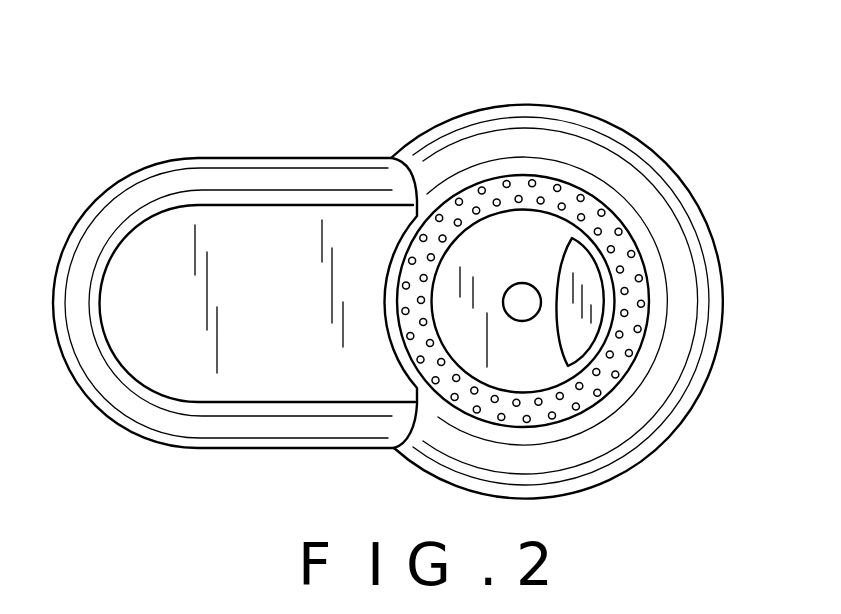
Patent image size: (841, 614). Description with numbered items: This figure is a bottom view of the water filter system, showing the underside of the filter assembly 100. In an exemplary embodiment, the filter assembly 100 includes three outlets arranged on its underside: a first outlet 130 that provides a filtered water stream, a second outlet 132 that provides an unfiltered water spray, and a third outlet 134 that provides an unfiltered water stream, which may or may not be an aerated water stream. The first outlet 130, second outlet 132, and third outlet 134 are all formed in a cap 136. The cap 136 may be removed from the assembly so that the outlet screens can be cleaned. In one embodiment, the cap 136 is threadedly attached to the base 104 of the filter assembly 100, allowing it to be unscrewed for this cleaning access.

The filter assembly 100 is at (442, 72).
The base 104 is at (612, 123).
The first outlet 130 is at (517, 298).
The second outlet 132 is at (465, 212).
The third outlet 134 is at (587, 343).
The cap 136 is at (617, 212).